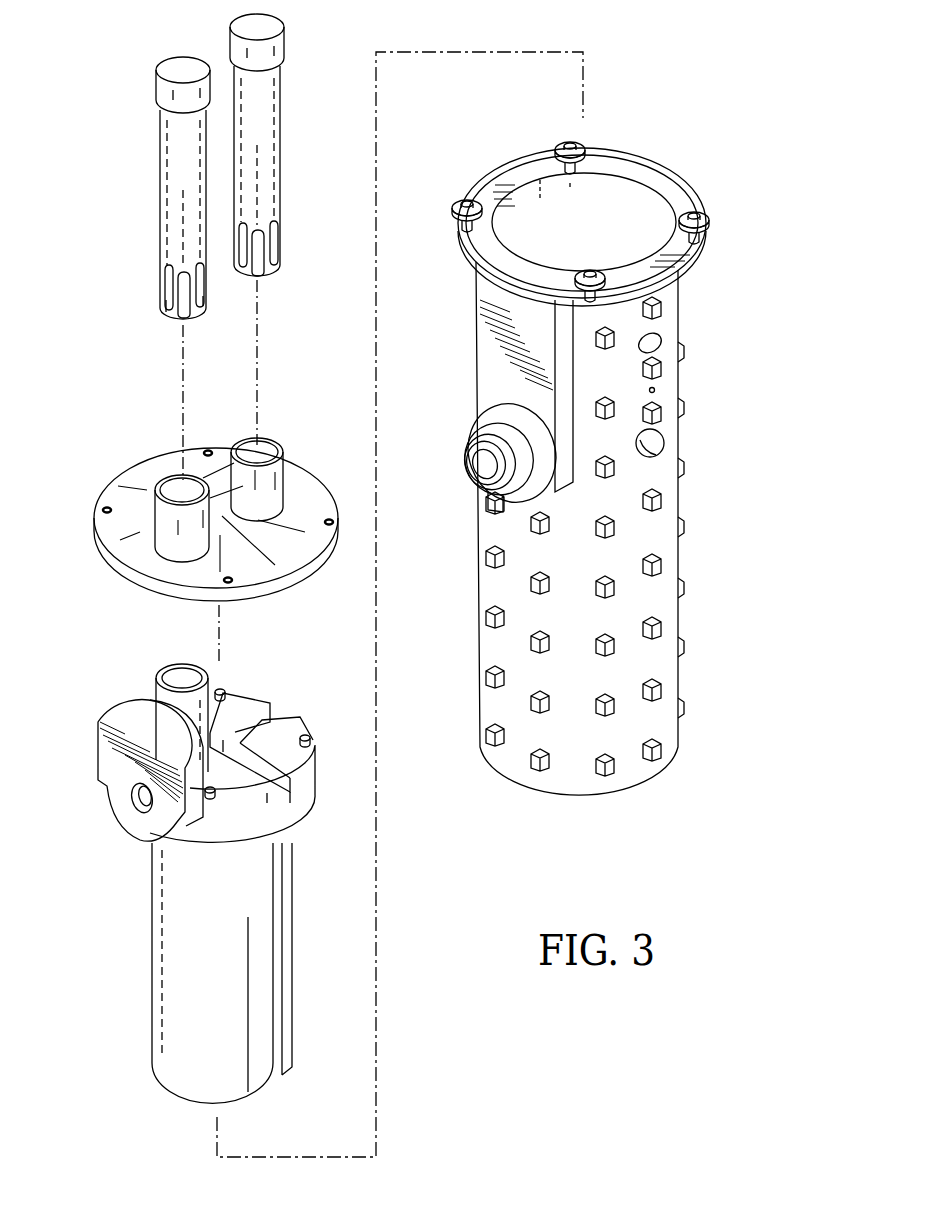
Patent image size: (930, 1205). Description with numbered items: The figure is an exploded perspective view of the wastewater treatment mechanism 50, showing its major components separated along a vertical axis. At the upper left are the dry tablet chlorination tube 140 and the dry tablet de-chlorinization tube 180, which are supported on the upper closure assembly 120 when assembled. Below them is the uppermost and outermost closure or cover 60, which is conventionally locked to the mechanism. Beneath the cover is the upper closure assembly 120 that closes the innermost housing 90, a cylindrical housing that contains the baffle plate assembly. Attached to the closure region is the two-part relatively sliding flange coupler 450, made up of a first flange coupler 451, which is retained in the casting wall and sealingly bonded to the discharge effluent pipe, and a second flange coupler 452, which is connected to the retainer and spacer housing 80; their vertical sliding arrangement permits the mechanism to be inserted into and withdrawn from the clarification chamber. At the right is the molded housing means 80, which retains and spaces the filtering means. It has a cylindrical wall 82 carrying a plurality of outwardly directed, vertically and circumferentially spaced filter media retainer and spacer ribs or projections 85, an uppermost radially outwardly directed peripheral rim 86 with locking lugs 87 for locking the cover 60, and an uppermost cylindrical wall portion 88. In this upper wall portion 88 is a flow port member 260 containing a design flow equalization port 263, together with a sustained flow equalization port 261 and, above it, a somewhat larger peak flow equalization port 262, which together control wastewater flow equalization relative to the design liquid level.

The wastewater treatment mechanism 50 is at (657, 137).
The uppermost and outermost closure or cover 60 is at (128, 467).
The housing means 80 is at (683, 540).
The cylindrical wall 82 is at (650, 658).
The filter media retainer and spacer ribs or projections 85 is at (597, 527).
The peripheral rim 86 is at (505, 188).
The locking lugs 87 is at (578, 145).
The uppermost cylindrical wall portion 88 is at (592, 388).
The innermost housing 90 is at (297, 902).
The upper closure assembly 120 is at (307, 718).
The dry tablet chlorination tube 140 is at (283, 162).
The dry tablet de-chlorinization tube 180 is at (173, 172).
The flow port member 260 is at (663, 437).
The sustained flow equalization ports 261 is at (656, 391).
The peak flow equalization ports 262 is at (663, 340).
The design flow equalization port 263 is at (657, 453).
The two-part relatively sliding flange coupler 450 is at (105, 835).
The first flange coupler 451 is at (93, 748).
The second flange coupler 452 is at (466, 476).